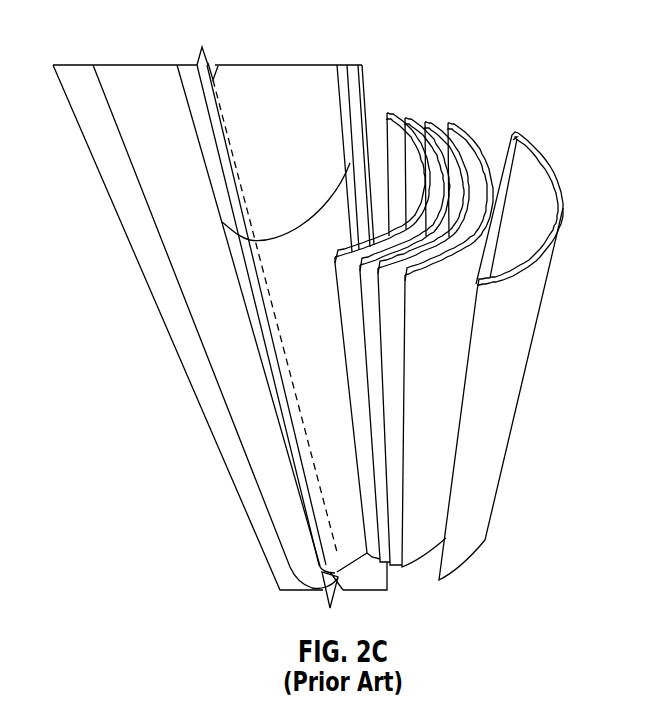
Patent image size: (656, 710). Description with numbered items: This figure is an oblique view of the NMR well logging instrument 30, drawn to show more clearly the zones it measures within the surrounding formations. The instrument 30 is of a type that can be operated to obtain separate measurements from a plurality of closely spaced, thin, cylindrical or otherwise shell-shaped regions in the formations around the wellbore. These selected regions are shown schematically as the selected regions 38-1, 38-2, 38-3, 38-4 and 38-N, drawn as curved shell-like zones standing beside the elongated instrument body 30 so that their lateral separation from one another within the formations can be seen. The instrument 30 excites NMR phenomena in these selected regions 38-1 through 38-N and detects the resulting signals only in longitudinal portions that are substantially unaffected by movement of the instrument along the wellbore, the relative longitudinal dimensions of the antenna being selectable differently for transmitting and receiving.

The NMR well logging instrument 30 is at (290, 293).
The selected region 38-1 is at (390, 108).
The selected region 38-2 is at (407, 115).
The selected region 38-3 is at (425, 120).
The selected region 38-4 is at (448, 125).
The selected region 38-N is at (517, 135).